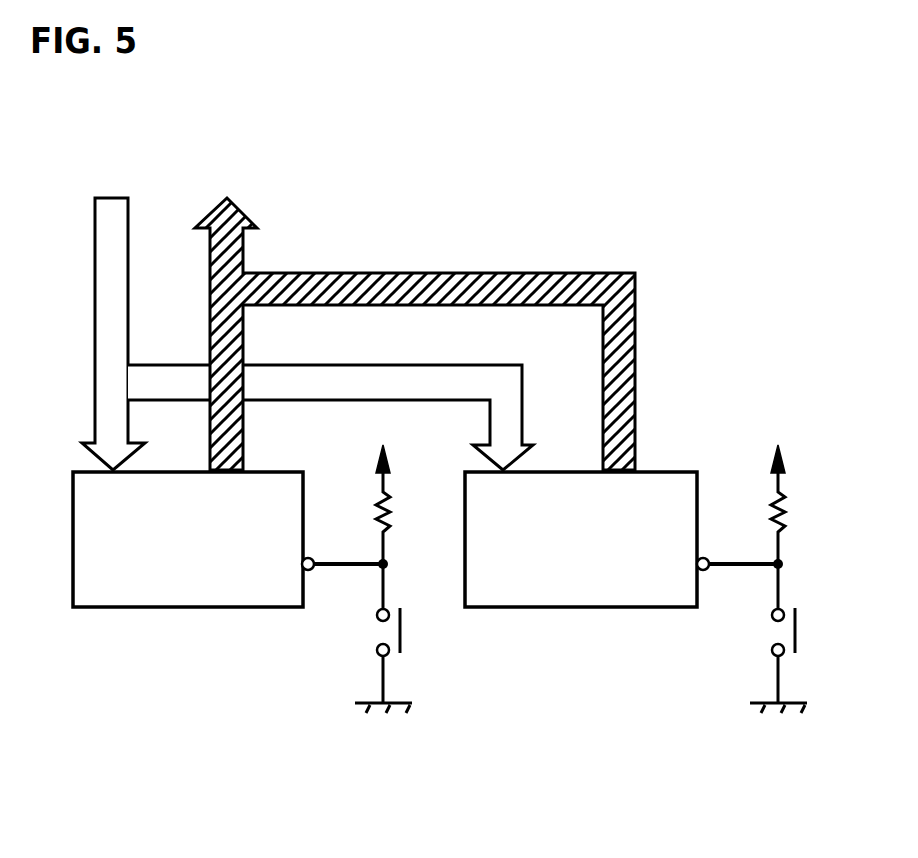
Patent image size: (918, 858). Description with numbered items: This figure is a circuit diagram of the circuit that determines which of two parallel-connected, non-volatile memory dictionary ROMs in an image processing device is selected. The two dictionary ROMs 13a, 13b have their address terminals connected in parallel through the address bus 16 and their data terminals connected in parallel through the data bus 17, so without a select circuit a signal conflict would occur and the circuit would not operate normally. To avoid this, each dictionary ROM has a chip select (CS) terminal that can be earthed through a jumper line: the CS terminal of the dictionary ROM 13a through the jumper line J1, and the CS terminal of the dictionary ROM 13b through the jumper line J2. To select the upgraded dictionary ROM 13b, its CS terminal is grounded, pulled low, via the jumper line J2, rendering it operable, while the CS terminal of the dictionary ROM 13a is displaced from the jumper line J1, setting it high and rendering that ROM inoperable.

The address bus 16 is at (503, 365).
The data bus 17 is at (526, 272).
The dictionary ROM 13a is at (183, 607).
The dictionary ROM 13b is at (574, 607).
The jumper line J1 is at (388, 633).
The jumper line J2 is at (783, 633).